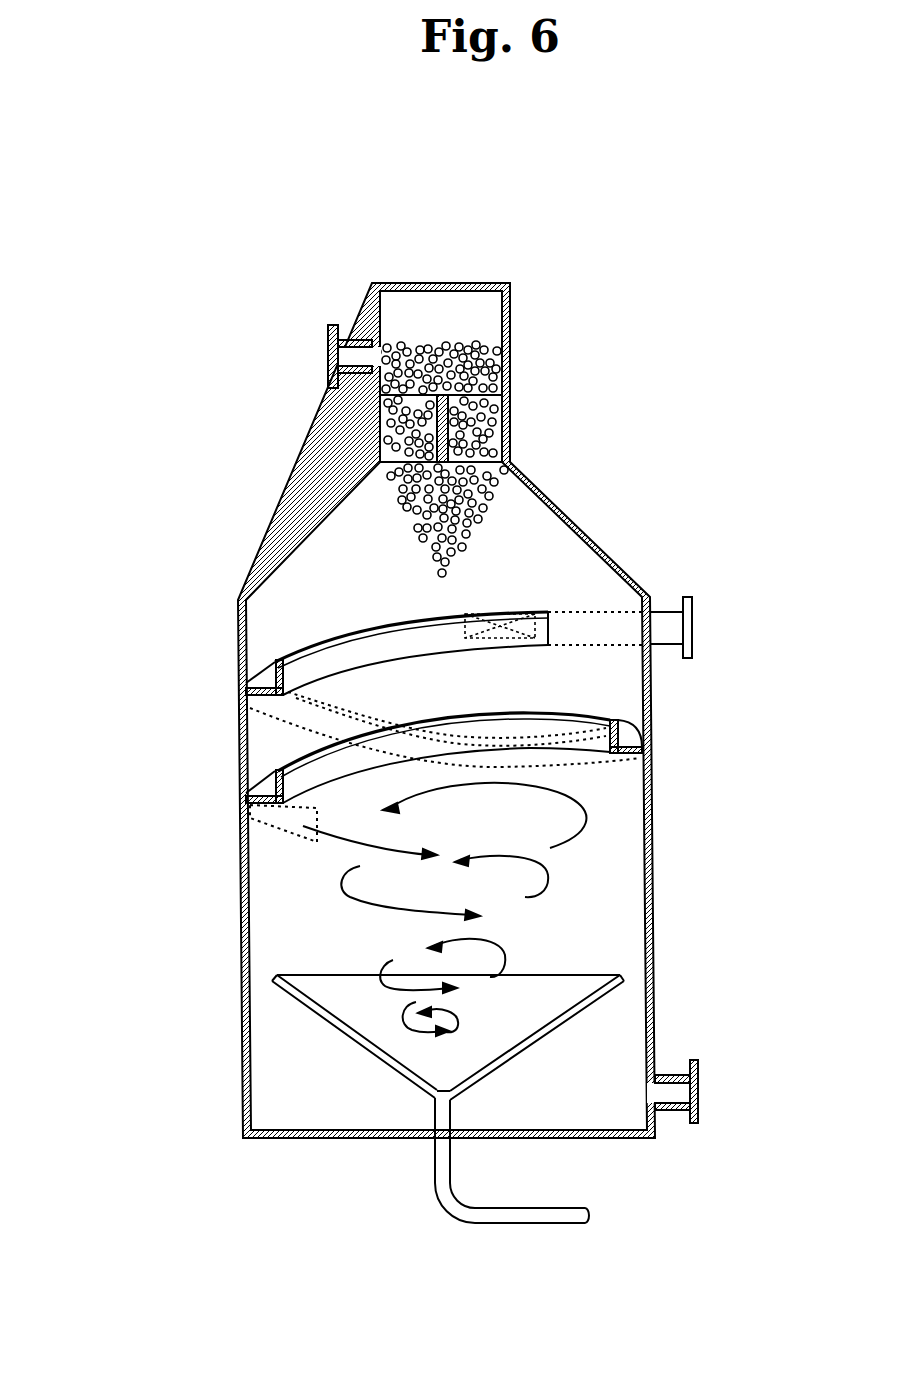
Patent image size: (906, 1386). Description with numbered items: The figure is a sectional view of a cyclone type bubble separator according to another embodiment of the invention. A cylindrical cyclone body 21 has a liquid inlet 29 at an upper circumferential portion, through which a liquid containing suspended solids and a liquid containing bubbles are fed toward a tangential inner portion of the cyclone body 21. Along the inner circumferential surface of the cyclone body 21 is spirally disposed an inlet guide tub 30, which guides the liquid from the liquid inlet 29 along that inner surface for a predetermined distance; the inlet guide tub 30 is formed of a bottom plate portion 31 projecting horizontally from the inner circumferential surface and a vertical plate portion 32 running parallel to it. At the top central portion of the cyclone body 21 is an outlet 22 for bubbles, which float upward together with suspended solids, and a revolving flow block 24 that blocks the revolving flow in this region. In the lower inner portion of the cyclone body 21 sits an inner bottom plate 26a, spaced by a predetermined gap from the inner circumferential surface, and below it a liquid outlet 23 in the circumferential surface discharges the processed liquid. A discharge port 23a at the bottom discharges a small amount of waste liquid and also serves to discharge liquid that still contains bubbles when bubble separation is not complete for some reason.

The cyclone body 21 is at (653, 872).
The outlet for bubbles 22 is at (348, 338).
The liquid outlet 23 is at (688, 1095).
The discharge port 23a is at (513, 1222).
The revolving flow block 24 is at (447, 438).
The inner bottom plate 26a is at (312, 1007).
The liquid inlet 29 is at (671, 630).
The inlet guide tub 30 is at (340, 630).
The bottom plate portion 31 is at (275, 682).
The vertical plate portion 32 is at (342, 648).